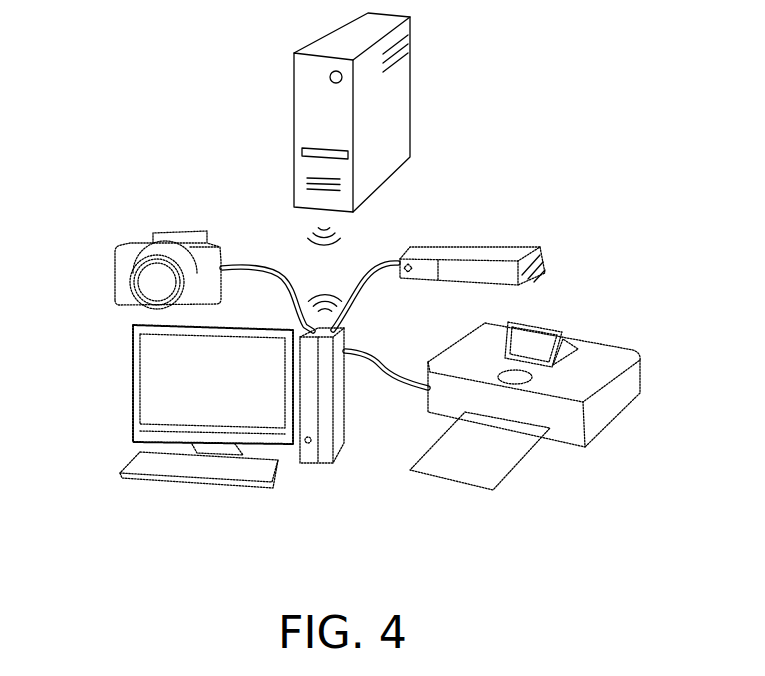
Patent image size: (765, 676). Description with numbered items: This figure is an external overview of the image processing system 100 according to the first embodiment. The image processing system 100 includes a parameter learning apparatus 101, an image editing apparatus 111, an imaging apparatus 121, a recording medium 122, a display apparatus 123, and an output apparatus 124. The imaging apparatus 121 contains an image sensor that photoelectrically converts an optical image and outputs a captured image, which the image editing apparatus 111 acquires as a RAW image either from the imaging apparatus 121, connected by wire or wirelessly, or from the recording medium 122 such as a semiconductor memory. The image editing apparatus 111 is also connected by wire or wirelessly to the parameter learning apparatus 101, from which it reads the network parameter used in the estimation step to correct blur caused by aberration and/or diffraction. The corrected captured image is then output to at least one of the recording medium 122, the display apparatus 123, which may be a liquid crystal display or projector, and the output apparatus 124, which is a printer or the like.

The image processing system 100 is at (592, 92).
The parameter learning apparatus 101 is at (294, 53).
The image editing apparatus 111 is at (322, 465).
The imaging apparatus 121 is at (115, 248).
The recording medium 122 is at (543, 250).
The display apparatus 123 is at (133, 380).
The output apparatus 124 is at (597, 347).